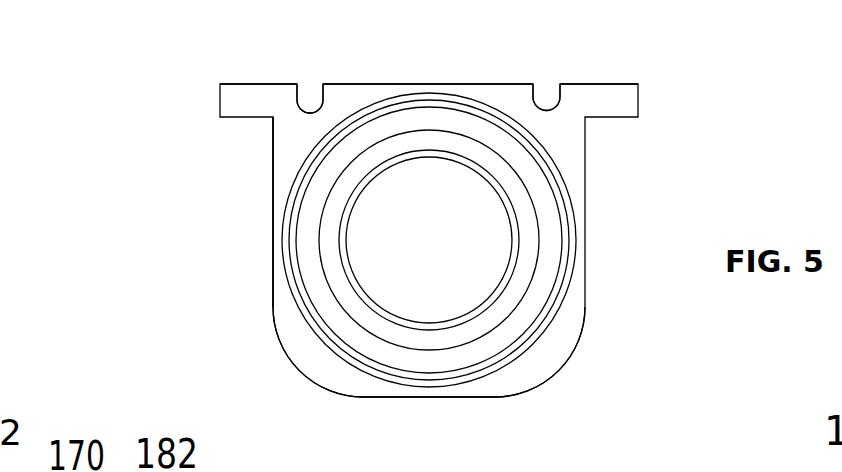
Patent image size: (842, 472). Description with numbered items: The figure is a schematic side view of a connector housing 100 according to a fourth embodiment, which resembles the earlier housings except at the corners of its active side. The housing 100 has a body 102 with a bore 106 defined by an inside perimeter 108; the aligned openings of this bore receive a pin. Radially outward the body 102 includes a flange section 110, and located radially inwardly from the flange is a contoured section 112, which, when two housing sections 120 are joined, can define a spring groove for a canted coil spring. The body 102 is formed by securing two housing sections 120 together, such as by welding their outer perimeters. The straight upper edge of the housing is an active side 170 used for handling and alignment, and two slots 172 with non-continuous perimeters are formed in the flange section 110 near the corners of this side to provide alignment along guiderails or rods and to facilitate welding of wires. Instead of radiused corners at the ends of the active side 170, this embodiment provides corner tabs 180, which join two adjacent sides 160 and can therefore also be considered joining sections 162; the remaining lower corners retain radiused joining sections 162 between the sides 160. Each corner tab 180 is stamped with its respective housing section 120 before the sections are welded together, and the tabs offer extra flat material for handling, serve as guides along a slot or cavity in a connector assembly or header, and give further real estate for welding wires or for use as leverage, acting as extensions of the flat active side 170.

The connector housing 100 is at (220, 232).
The body 102 is at (562, 143).
The bore 106 is at (452, 252).
The inside perimeter 108 is at (496, 204).
The flange section 110 is at (550, 355).
The contoured section 112 is at (540, 300).
The housing section 120 is at (322, 184).
The side 160 is at (272, 296).
The joining section 162 is at (312, 371).
The active side 170 is at (435, 82).
The slot 172 is at (309, 100).
The corner tab 180 is at (235, 98).